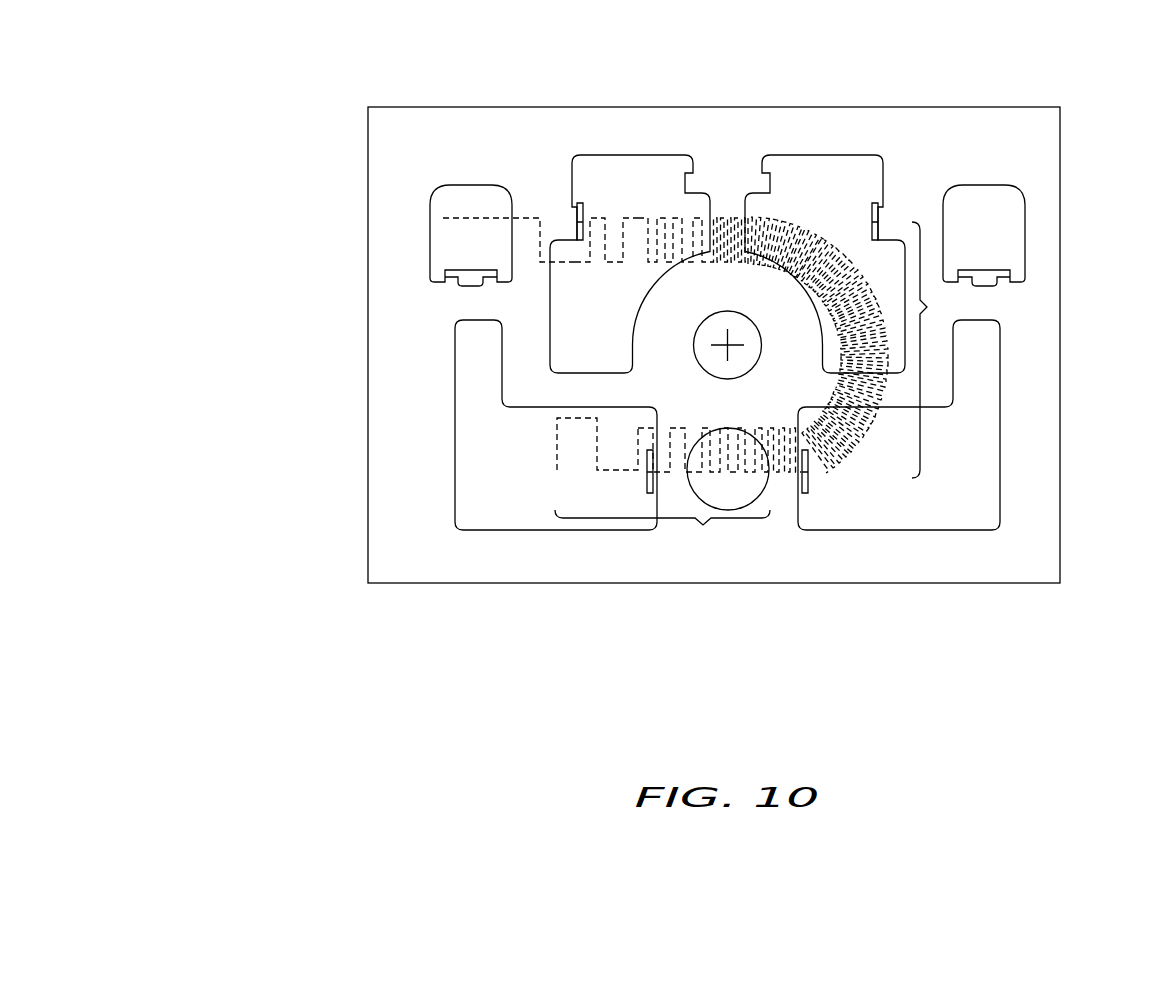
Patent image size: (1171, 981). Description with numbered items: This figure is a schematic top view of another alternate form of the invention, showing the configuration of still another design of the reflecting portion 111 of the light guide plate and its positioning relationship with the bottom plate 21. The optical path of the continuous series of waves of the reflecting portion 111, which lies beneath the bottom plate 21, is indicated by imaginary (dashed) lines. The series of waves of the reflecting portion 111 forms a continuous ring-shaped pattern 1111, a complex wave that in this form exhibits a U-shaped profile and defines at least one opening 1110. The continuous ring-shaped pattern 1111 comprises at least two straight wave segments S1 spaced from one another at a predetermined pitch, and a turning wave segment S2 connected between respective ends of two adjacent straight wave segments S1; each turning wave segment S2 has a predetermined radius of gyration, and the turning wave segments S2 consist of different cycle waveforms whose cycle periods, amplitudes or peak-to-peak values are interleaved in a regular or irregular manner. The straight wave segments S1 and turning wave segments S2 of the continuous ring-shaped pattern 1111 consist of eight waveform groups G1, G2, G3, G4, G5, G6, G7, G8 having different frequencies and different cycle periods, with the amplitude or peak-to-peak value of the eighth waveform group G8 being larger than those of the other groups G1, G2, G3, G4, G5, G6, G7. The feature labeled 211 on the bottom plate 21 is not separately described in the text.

The bottom plate 21 is at (1040, 326).
The protrusion of base 211 is at (978, 320).
The reflecting portion 111 is at (833, 223).
The continuous ring-shaped pattern 1111 is at (843, 245).
The opening 1110 is at (482, 218).
The first waveform group G1 is at (532, 212).
The second waveform group G2 is at (613, 212).
The third waveform group G3 is at (667, 212).
The fourth waveform group G4 is at (734, 212).
The fifth waveform group G5 is at (799, 212).
The sixth waveform group G6 is at (857, 445).
The seventh waveform group G7 is at (838, 458).
The eighth waveform group G8 is at (553, 467).
The straight wave segment S1 is at (662, 534).
The turning wave segment S2 is at (939, 350).